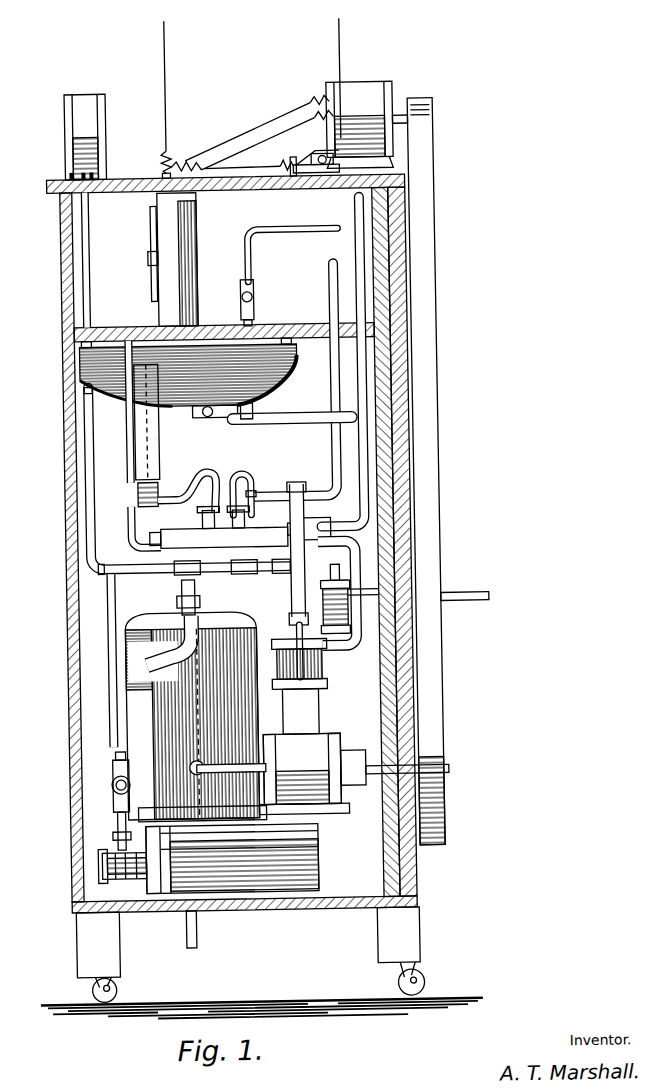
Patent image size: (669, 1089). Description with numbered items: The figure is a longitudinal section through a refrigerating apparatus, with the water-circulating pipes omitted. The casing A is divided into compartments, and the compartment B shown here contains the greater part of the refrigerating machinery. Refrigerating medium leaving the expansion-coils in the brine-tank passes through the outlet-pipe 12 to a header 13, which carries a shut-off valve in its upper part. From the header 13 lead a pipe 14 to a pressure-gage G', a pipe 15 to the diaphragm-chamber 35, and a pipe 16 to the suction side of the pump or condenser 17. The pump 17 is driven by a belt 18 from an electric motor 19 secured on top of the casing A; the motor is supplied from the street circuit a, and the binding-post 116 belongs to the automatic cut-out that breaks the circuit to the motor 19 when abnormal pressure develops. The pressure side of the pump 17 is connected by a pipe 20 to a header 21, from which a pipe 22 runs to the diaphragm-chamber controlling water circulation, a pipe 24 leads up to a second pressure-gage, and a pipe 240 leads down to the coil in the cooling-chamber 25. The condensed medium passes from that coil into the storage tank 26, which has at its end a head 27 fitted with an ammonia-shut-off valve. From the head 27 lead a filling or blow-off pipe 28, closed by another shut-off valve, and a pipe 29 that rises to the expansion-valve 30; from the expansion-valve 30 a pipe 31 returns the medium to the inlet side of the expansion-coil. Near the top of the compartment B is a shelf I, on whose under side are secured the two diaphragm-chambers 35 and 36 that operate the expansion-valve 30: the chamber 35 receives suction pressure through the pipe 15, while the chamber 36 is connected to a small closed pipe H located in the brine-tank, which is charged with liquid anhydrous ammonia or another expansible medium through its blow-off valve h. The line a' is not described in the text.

The compartment B is at (72, 433).
The belt 18 is at (434, 210).
The electric motor 19 is at (369, 99).
The pressure-gage G' is at (99, 137).
The circuit of the street a is at (177, 100).
The line a' is at (321, 78).
The casing A is at (236, 176).
The binding-post 116 is at (320, 166).
The shelf I is at (105, 325).
The pipe 14 is at (96, 261).
The closed pipe or vessel H is at (302, 236).
The blow-off valve or header h is at (259, 309).
The outlet-pipe 12 is at (360, 208).
The pipe 31 is at (340, 382).
The diaphragm-chamber 35 is at (112, 394).
The diaphragm-chamber 36 is at (270, 399).
The expansion-valve 30 is at (158, 492).
The header 21 is at (178, 531).
The pipe 22 is at (251, 491).
The pipe 24 is at (89, 497).
The pipe 15 is at (90, 564).
The pipe 20 is at (357, 547).
The header 13 is at (291, 599).
The pipe 16 is at (318, 662).
The pump or condenser 17 is at (312, 774).
The pipe 240 is at (192, 592).
The cooling-chamber 25 is at (196, 717).
The pipe 29 is at (106, 689).
The filling or blow-off pipe 28 is at (105, 828).
The head 27 is at (104, 877).
The storage tank or chamber 26 is at (252, 893).